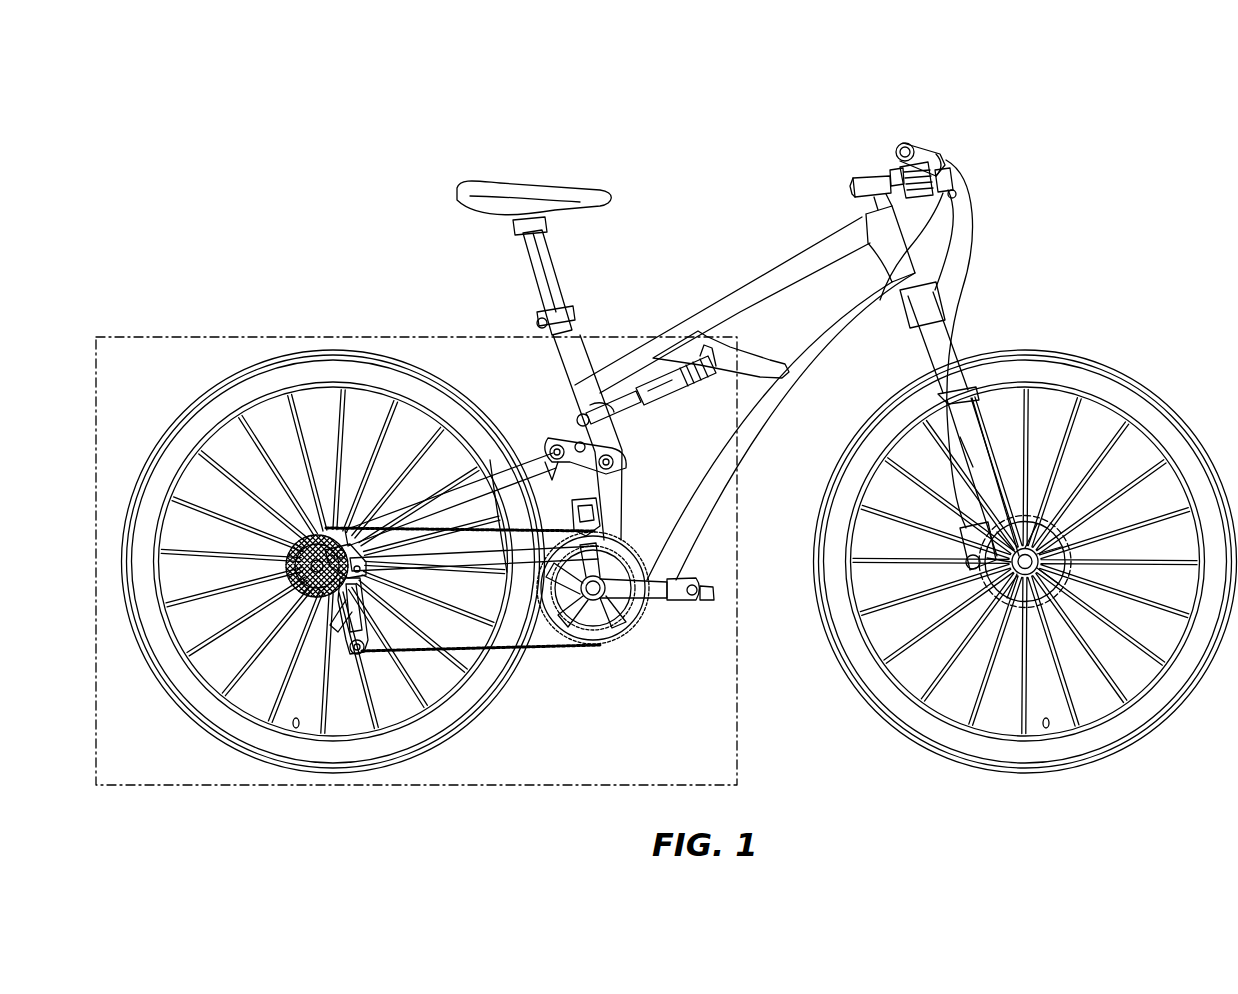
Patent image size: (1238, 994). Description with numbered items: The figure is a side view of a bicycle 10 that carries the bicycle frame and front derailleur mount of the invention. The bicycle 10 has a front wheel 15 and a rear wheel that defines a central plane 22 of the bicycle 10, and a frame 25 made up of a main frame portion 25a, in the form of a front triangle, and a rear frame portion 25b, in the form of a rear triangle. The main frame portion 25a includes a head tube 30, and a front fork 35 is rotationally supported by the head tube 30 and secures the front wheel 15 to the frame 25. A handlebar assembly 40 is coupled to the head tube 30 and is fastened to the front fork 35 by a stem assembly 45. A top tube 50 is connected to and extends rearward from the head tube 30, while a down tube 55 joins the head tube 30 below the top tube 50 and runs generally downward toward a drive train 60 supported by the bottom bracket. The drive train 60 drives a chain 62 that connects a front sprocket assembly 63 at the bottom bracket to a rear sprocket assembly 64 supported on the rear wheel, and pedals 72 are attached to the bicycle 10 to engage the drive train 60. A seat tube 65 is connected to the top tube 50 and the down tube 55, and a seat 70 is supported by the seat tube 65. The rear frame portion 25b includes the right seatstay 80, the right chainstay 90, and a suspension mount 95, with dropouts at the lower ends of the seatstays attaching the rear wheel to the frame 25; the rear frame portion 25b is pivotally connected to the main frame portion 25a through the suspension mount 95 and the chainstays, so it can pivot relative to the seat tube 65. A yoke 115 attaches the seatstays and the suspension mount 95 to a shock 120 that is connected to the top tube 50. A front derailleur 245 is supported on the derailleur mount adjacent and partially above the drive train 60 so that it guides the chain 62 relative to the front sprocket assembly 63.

The bicycle 10 is at (782, 86).
The front wheel 15 is at (1080, 356).
The central plane 22 is at (166, 338).
The frame 25 is at (757, 545).
The main frame portion 25a is at (696, 330).
The rear frame portion 25b is at (430, 510).
The head tube 30 is at (966, 258).
The front fork 35 is at (954, 336).
The handlebar assembly 40 is at (930, 160).
The stem assembly 45 is at (882, 178).
The top tube 50 is at (760, 289).
The down tube 55 is at (763, 426).
The drive train 60 is at (583, 664).
The chain 62 is at (545, 650).
The front sprocket assembly 63 is at (633, 617).
The rear sprocket assembly 64 is at (318, 590).
The seat tube 65 is at (560, 356).
The seat 70 is at (510, 186).
The pedals 72 is at (705, 600).
The right seatstay 80 is at (485, 478).
The right chainstay 90 is at (441, 578).
The suspension mount 95 is at (625, 457).
The yoke 115 is at (590, 408).
The shock 120 is at (652, 404).
The front derailleur 245 is at (600, 522).